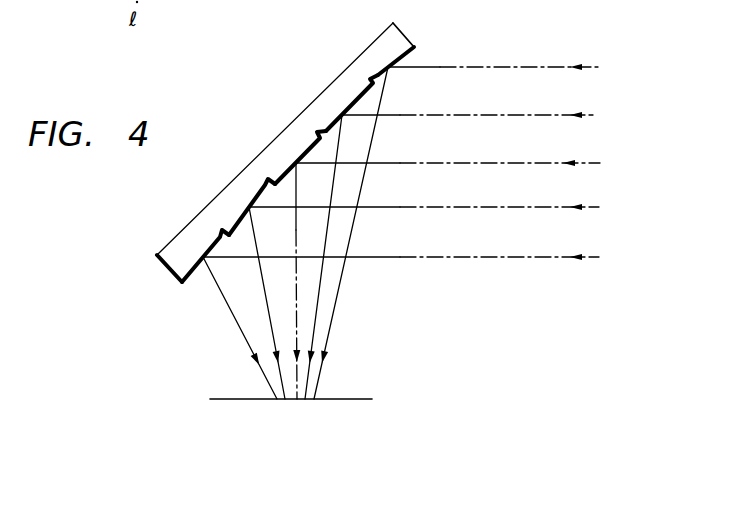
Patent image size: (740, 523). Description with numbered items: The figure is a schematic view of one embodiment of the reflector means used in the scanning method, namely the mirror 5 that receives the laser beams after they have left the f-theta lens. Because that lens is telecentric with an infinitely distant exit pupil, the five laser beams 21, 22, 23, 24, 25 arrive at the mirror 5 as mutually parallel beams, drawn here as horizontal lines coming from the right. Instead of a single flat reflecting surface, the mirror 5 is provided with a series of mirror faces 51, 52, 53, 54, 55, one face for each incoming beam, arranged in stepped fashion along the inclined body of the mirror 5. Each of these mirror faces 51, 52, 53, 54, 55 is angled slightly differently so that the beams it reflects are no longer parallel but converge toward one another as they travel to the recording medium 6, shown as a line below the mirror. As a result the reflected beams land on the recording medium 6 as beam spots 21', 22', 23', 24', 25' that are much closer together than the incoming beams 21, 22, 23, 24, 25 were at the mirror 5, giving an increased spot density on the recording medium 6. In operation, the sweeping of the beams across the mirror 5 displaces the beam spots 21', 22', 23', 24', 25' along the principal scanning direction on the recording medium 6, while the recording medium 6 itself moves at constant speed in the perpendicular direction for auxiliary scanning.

The mirror 5 is at (293, 118).
The mirror face 51 is at (380, 73).
The mirror face 52 is at (360, 98).
The mirror face 53 is at (285, 172).
The mirror face 54 is at (261, 190).
The mirror face 55 is at (215, 237).
The laser beam 21 is at (499, 49).
The laser beam 22 is at (484, 100).
The laser beam 23 is at (459, 148).
The laser beam 24 is at (436, 192).
The laser beam 25 is at (412, 242).
The beam spot 21' is at (356, 255).
The beam spot 22' is at (333, 283).
The beam spot 23' is at (302, 307).
The beam spot 24' is at (265, 329).
The beam spot 25' is at (240, 347).
The recording medium 6 is at (351, 398).